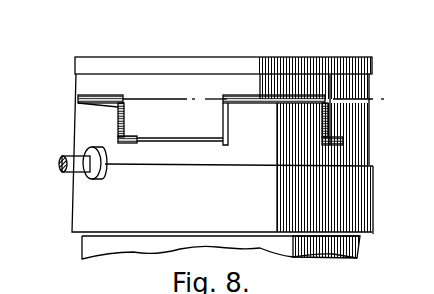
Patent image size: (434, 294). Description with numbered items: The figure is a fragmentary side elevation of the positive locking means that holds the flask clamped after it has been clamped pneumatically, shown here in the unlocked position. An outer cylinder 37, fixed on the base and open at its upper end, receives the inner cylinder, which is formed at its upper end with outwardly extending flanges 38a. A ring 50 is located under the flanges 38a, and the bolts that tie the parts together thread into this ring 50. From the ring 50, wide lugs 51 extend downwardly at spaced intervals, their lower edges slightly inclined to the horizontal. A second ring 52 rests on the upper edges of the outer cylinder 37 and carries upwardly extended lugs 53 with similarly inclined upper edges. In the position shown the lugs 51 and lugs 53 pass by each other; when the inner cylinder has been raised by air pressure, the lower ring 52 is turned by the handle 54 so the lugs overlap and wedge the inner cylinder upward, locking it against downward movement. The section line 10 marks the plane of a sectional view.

The section line 10 is at (78, 99).
The outwardly extending flanges 38a is at (143, 66).
The ring 50 is at (259, 88).
The wide lugs 51 is at (180, 122).
The second ring 52 is at (360, 170).
The upwardly extended lugs 53 is at (105, 120).
The handle 54 is at (72, 173).
The cylinder 37 is at (303, 245).